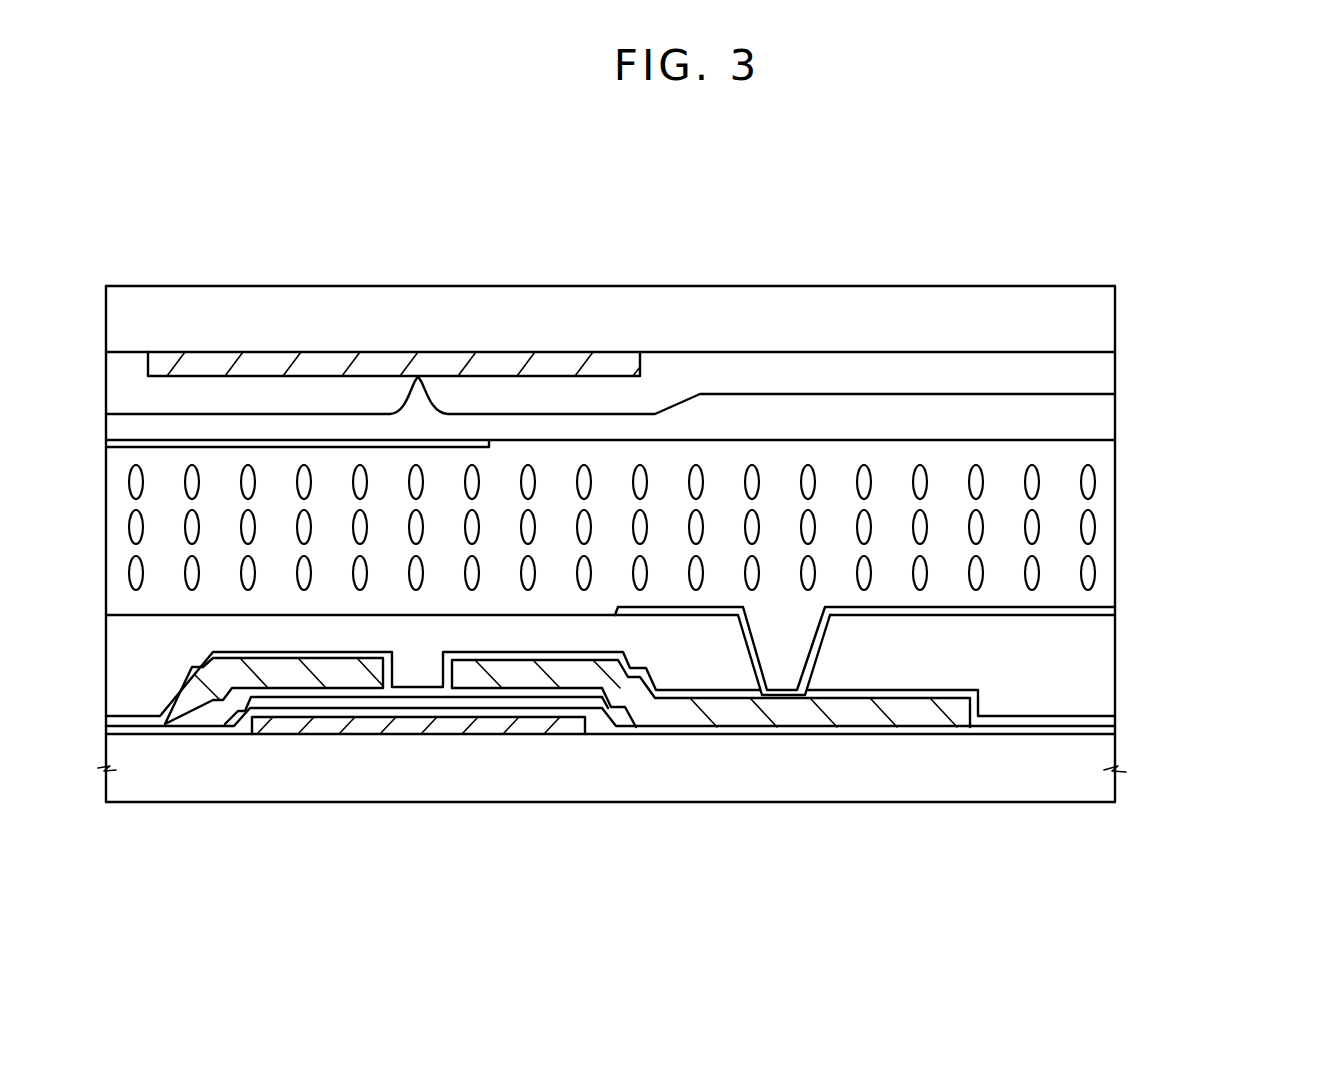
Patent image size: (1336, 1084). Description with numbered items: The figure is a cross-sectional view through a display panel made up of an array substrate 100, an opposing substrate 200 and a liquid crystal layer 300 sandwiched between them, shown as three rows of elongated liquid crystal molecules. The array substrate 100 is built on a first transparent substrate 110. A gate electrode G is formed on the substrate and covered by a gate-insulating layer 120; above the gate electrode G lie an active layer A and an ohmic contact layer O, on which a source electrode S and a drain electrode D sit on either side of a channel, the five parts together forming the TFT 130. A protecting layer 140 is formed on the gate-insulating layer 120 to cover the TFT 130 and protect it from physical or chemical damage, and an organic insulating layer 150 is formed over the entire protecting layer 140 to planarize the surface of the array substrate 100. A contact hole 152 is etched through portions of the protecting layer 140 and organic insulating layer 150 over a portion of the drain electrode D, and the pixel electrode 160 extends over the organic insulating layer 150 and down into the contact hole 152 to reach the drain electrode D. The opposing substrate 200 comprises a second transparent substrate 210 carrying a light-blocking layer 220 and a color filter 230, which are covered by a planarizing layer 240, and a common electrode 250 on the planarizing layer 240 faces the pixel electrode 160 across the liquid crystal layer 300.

The array substrate 100 is at (1219, 707).
The first transparent substrate 110 is at (1112, 770).
The gate-insulating layer 120 is at (1110, 728).
The TFT 130 is at (567, 787).
The protecting layer 140 is at (1110, 718).
The organic insulating layer 150 is at (1110, 672).
The contact hole 152 is at (797, 665).
The pixel electrode 160 is at (1110, 612).
The opposing substrate 200 is at (1219, 372).
The second transparent substrate 210 is at (1110, 326).
The light-blocking layer 220 is at (158, 360).
The color filter 230 is at (1110, 371).
The planarizing layer 240 is at (1110, 418).
The common electrode 250 is at (115, 441).
The liquid crystal layer 300 is at (1097, 531).
The source electrode S is at (280, 676).
The gate electrode G is at (365, 726).
The active layer A is at (457, 706).
The ohmic contact layer O is at (541, 692).
The drain electrode D is at (711, 766).